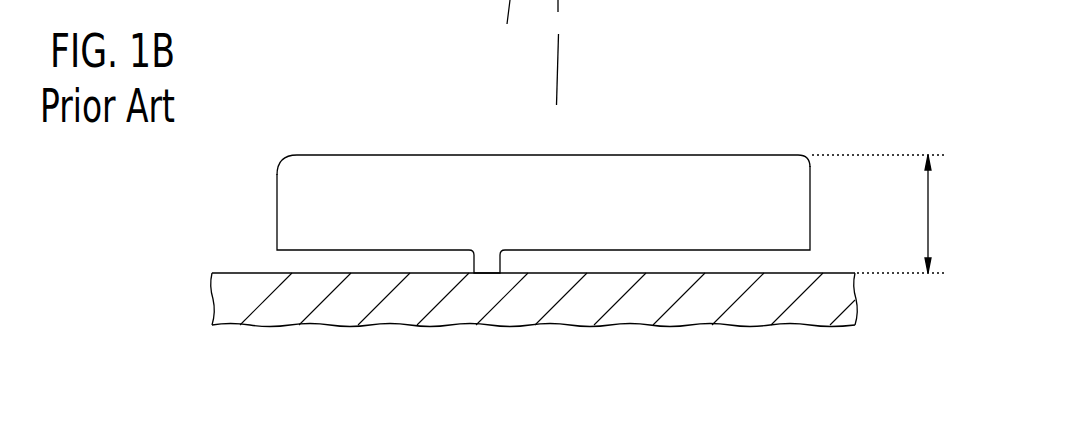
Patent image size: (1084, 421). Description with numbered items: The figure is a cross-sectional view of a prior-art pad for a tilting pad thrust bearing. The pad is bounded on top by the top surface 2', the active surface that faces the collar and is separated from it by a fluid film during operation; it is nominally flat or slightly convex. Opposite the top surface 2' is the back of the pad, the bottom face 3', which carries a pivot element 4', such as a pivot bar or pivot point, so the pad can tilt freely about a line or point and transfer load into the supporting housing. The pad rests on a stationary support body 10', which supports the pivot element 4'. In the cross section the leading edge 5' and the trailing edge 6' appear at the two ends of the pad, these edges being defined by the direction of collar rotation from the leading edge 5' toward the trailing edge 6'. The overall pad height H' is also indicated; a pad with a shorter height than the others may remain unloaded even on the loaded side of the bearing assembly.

The top surface 2' is at (543, 130).
The bottom face 3' is at (640, 311).
The pivot element 4' is at (470, 310).
The leading edge 5' is at (796, 208).
The trailing edge 6' is at (294, 212).
The support body 10' is at (498, 282).
The pad height H' is at (887, 214).